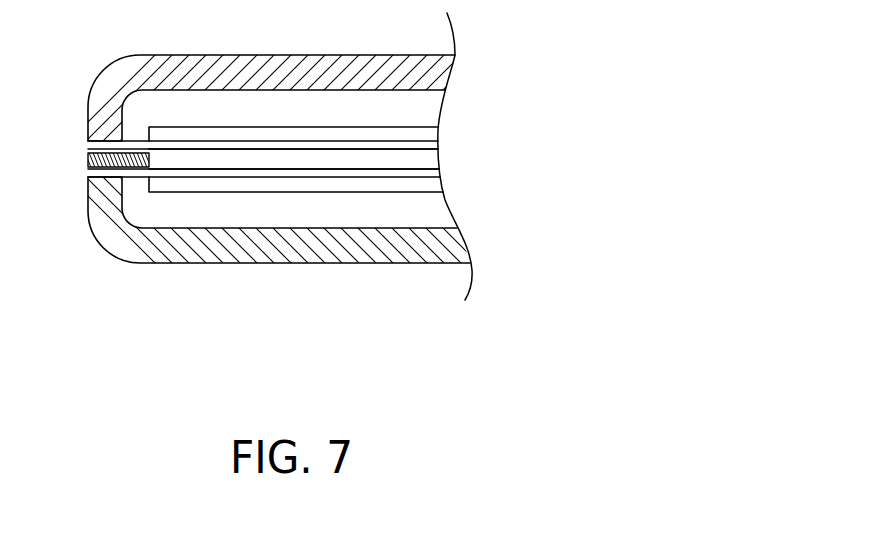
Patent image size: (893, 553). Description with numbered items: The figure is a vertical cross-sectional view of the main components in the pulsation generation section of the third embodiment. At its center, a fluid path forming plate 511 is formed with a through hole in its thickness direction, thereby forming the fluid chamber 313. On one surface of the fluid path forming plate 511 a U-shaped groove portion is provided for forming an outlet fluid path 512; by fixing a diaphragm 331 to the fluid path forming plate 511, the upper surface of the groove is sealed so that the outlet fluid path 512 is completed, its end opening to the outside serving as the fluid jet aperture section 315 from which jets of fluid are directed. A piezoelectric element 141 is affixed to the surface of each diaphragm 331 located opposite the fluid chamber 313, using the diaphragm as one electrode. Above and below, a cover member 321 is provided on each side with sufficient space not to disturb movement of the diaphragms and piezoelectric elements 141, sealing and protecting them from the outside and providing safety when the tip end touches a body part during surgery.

The piezoelectric element 141 is at (368, 133).
The fluid chamber 313 is at (387, 162).
The fluid jet aperture section 315 is at (88, 152).
The cover member 321 is at (428, 77).
The diaphragm 331 is at (277, 145).
The fluid path forming plate 511 is at (113, 178).
The outlet fluid path 512 is at (112, 153).